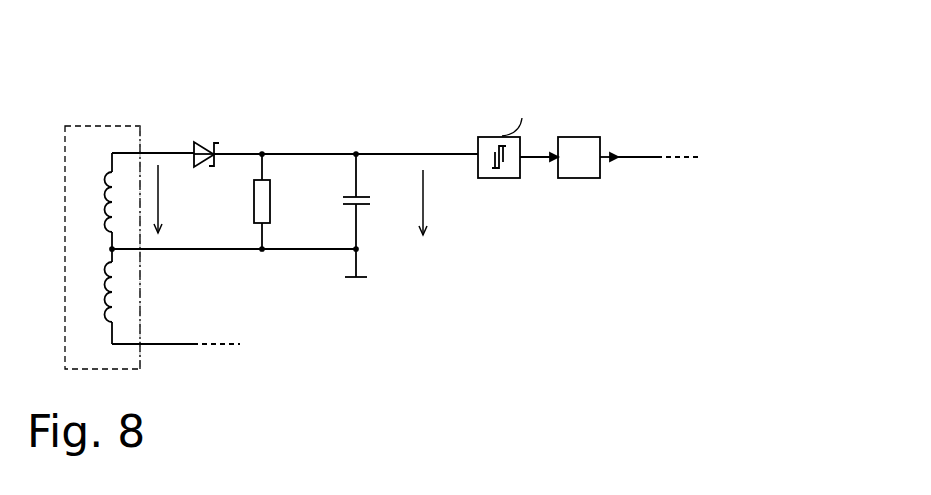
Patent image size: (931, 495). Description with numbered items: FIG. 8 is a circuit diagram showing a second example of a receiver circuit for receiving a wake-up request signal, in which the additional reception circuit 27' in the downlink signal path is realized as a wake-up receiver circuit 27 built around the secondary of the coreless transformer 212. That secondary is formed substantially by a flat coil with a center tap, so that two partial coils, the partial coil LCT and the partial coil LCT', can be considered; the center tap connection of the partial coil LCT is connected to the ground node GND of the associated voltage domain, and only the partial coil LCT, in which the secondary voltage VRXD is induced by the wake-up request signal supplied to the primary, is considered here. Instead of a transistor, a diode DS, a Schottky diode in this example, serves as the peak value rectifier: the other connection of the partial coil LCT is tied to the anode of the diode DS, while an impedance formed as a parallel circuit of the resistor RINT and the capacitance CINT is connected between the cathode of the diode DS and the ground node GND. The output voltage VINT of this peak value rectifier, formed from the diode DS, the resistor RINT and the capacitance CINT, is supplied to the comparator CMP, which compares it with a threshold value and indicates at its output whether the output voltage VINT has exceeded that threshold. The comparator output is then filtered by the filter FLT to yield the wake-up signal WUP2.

The coreless transformer 212 is at (163, 236).
The additional reception circuit 27' is at (430, 217).
The wake-up receiver circuit 27 is at (430, 217).
The partial coil LCT is at (94, 201).
The partial coil LCT' is at (94, 296).
The diode DS is at (208, 142).
The resistor RINT is at (278, 201).
The capacitance CINT is at (375, 201).
The ground node GND is at (373, 276).
The secondary voltage VRXD is at (173, 199).
The output voltage VINT is at (439, 202).
The comparator CMP is at (510, 136).
The filter FLT is at (579, 157).
The wake-up signal WUP2 is at (651, 149).